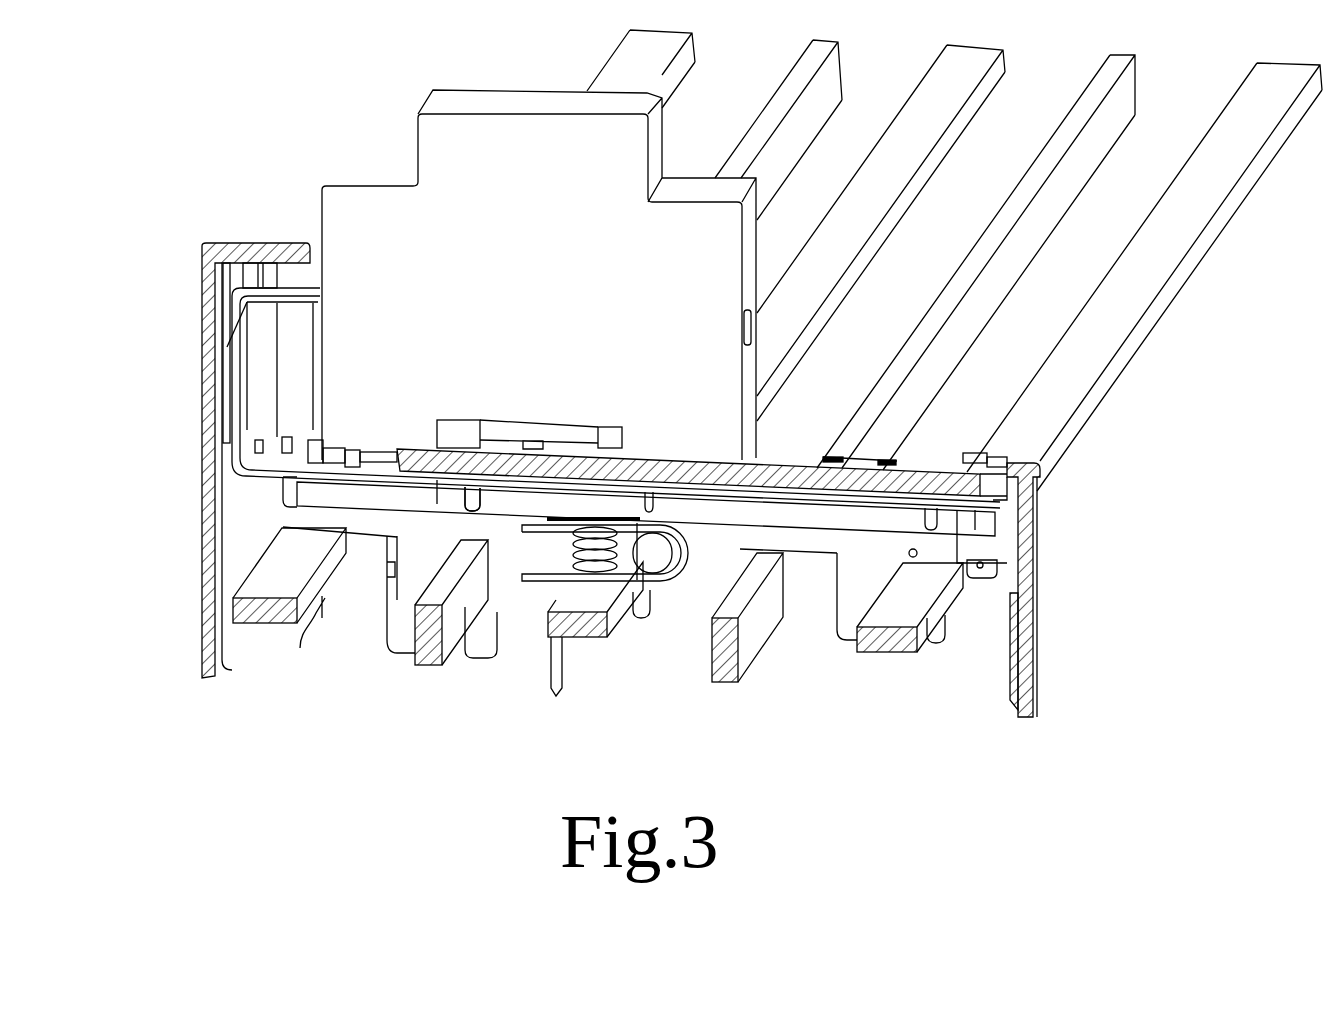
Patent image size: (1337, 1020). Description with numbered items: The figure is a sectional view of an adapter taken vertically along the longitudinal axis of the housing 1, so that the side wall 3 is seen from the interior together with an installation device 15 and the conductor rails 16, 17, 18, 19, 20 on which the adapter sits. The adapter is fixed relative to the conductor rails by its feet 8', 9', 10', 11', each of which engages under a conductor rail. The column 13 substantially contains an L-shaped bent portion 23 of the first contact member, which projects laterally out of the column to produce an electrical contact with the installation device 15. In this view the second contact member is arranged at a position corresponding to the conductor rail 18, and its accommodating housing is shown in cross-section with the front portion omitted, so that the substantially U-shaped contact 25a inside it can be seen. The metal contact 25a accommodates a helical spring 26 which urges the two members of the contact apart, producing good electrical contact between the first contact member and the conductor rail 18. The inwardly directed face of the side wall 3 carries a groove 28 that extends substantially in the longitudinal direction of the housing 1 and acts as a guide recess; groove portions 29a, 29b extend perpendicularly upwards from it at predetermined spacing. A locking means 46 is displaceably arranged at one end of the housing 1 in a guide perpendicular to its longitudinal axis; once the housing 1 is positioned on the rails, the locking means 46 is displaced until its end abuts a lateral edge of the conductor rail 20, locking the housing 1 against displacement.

The housing 1 is at (923, 473).
The side wall 3 is at (767, 507).
The foot 8' is at (314, 642).
The foot 9' is at (479, 665).
The foot 10' is at (626, 654).
The foot 11' is at (933, 676).
The column 13 is at (204, 330).
The installation device 15 is at (521, 316).
The conductor rail 16 is at (268, 628).
The conductor rail 17 is at (433, 655).
The conductor rail 18 is at (583, 645).
The conductor rail 19 is at (738, 676).
The conductor rail 20 is at (883, 650).
The L-shaped bent portion 23 is at (232, 343).
The U-shaped contact 25a is at (643, 588).
The helical spring 26 is at (548, 622).
The groove 28 is at (830, 530).
The groove portion 29a is at (282, 478).
The groove portion 29b is at (465, 493).
The locking means 46 is at (987, 578).